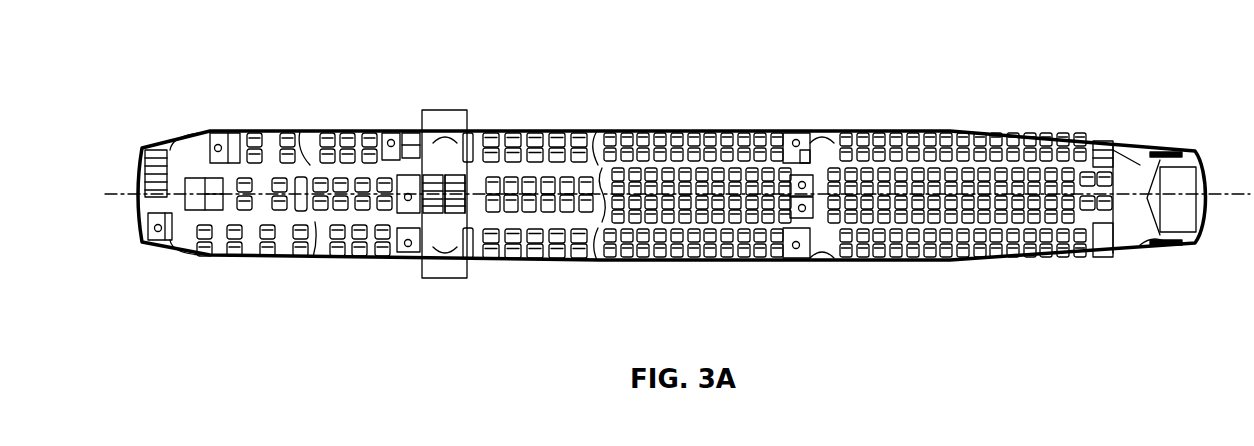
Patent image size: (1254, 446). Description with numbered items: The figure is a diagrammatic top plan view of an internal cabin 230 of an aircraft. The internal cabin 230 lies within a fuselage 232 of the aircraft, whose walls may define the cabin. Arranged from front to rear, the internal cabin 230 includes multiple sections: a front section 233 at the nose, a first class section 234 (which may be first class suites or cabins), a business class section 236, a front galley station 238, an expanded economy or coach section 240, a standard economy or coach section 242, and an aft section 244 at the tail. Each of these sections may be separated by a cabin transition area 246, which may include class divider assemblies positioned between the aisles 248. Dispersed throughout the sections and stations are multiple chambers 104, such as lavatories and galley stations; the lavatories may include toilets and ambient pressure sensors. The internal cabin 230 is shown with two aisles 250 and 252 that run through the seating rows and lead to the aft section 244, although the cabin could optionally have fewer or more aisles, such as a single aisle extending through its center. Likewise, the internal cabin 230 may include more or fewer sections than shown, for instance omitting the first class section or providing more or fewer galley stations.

The internal cabin 230 is at (672, 176).
The fuselage 232 is at (550, 62).
The front section 233 is at (193, 270).
The first class section 234 is at (277, 259).
The business class section 236 is at (340, 128).
The front galley station 238 is at (443, 274).
The expanded economy or coach section 240 is at (531, 258).
The standard economy or coach section 242 is at (858, 201).
The aft section 244 is at (1138, 158).
The cabin transition area 246 is at (205, 128).
The aisles 248 is at (396, 143).
The chambers 104 is at (408, 196).
The aisle 250 is at (958, 167).
The aisle 252 is at (972, 229).